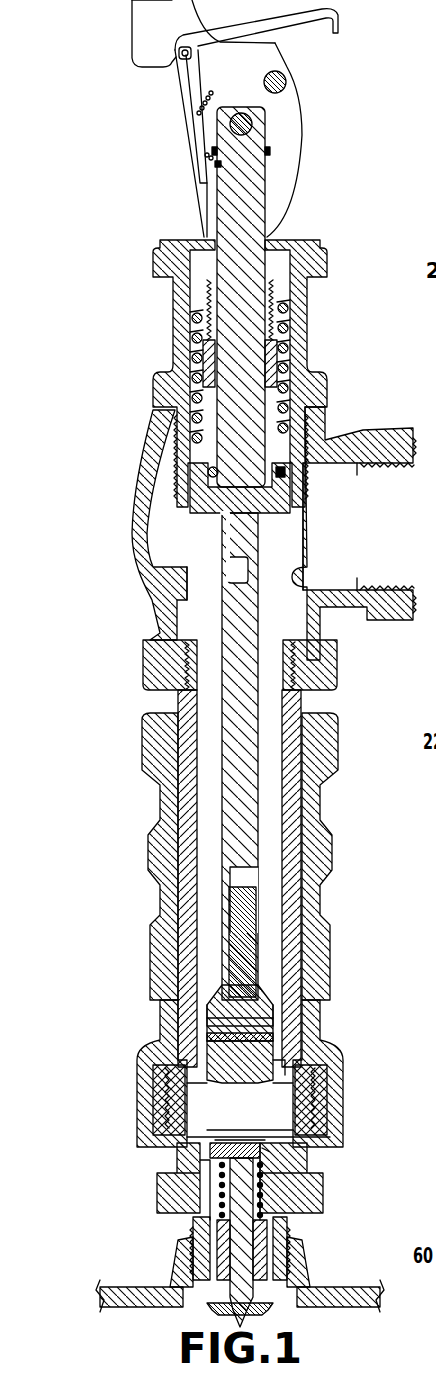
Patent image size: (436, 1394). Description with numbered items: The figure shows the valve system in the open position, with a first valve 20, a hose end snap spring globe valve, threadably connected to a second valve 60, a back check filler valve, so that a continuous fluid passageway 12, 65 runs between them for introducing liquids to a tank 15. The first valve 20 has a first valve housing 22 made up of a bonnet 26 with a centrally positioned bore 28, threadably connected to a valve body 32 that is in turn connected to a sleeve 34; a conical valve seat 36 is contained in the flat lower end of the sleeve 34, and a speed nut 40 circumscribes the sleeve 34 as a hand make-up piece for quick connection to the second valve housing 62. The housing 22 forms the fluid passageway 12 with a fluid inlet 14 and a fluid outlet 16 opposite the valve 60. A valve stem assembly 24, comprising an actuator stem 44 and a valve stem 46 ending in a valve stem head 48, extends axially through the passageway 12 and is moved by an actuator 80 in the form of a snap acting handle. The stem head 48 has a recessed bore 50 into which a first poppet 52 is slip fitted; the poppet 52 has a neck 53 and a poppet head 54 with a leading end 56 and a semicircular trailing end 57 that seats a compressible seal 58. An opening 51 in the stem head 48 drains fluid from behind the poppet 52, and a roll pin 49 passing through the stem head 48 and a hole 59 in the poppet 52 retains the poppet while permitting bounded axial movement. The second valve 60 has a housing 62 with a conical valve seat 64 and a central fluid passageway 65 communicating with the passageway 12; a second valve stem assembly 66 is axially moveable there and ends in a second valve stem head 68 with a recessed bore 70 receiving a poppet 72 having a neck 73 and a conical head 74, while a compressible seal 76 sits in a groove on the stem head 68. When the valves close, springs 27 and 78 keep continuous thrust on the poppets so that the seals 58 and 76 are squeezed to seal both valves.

The fluid passageway 12 is at (264, 627).
The fluid inlet 14 is at (378, 527).
The tank 15 is at (368, 1295).
The fluid outlet 16 is at (237, 1114).
The first valve 20 is at (125, 430).
The first valve housing 22 is at (147, 700).
The valve stem assembly 24 is at (205, 548).
The bonnet 26 is at (190, 283).
The spring 27 is at (287, 338).
The bore 28 is at (200, 315).
The valve body 32 is at (395, 447).
The sleeve 34 is at (290, 707).
The valve seat 36 is at (217, 1127).
The speed nut 40 is at (167, 840).
The actuator stem 44 is at (233, 302).
The valve stem 46 is at (243, 777).
The valve stem head 48 is at (245, 966).
The roll pin 49 is at (240, 1038).
The recessed bore 50 is at (210, 1020).
The opening 51 is at (210, 1012).
The first poppet 52 is at (257, 1054).
The neck 53 is at (212, 1033).
The poppet head 54 is at (220, 1075).
The leading end 56 is at (217, 1099).
The trailing end 57 is at (233, 1072).
The compressible seal 58 is at (275, 1068).
The hole 59 is at (240, 1038).
The second valve 60 is at (112, 1215).
The second valve housing 62 is at (310, 1207).
The valve seat 64 is at (210, 1132).
The fluid passageway 65 is at (268, 1190).
The second valve stem assembly 66 is at (242, 1255).
The second valve stem head 68 is at (267, 1158).
The recessed bore 70 is at (240, 1193).
The poppet 72 is at (247, 1163).
The neck 73 is at (250, 1182).
The head 74 is at (260, 1142).
The compressible seal 76 is at (267, 1150).
The spring 78 is at (222, 1208).
The actuator 80 is at (203, 82).